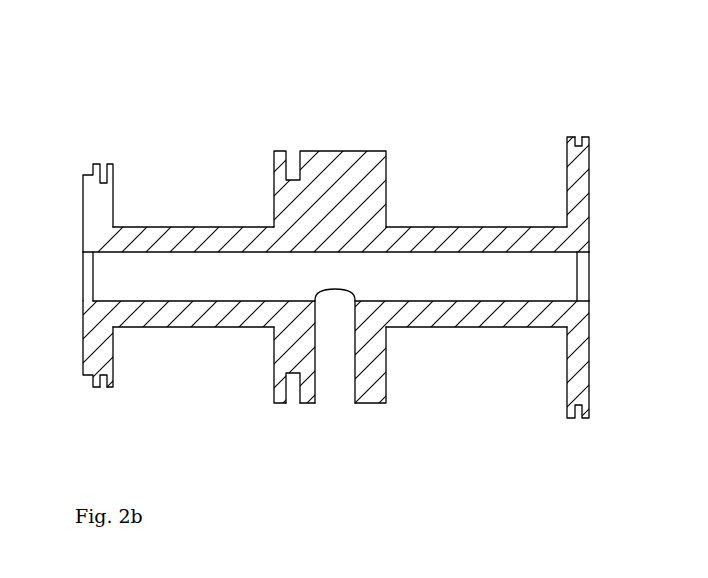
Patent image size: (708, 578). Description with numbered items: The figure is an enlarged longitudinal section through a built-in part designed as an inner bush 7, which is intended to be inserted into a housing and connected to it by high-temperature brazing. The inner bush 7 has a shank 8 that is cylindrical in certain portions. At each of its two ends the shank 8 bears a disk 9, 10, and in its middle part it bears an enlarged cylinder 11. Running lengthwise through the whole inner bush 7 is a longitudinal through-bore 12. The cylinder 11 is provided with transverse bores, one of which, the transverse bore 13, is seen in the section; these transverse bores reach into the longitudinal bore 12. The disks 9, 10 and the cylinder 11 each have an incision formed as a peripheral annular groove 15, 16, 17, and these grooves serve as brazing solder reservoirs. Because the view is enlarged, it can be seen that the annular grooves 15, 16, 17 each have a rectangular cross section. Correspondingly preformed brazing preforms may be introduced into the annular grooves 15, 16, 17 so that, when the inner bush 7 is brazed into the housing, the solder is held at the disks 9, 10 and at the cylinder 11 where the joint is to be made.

The inner bush 7 is at (185, 118).
The shank 8 is at (470, 320).
The disk 9 is at (85, 366).
The disk 10 is at (586, 186).
The enlarged cylinder 11 is at (358, 155).
The longitudinal through-bore 12 is at (193, 270).
The transverse bore 13 is at (332, 387).
The annular groove 15 is at (104, 387).
The annular groove 16 is at (293, 393).
The annular groove 17 is at (578, 147).